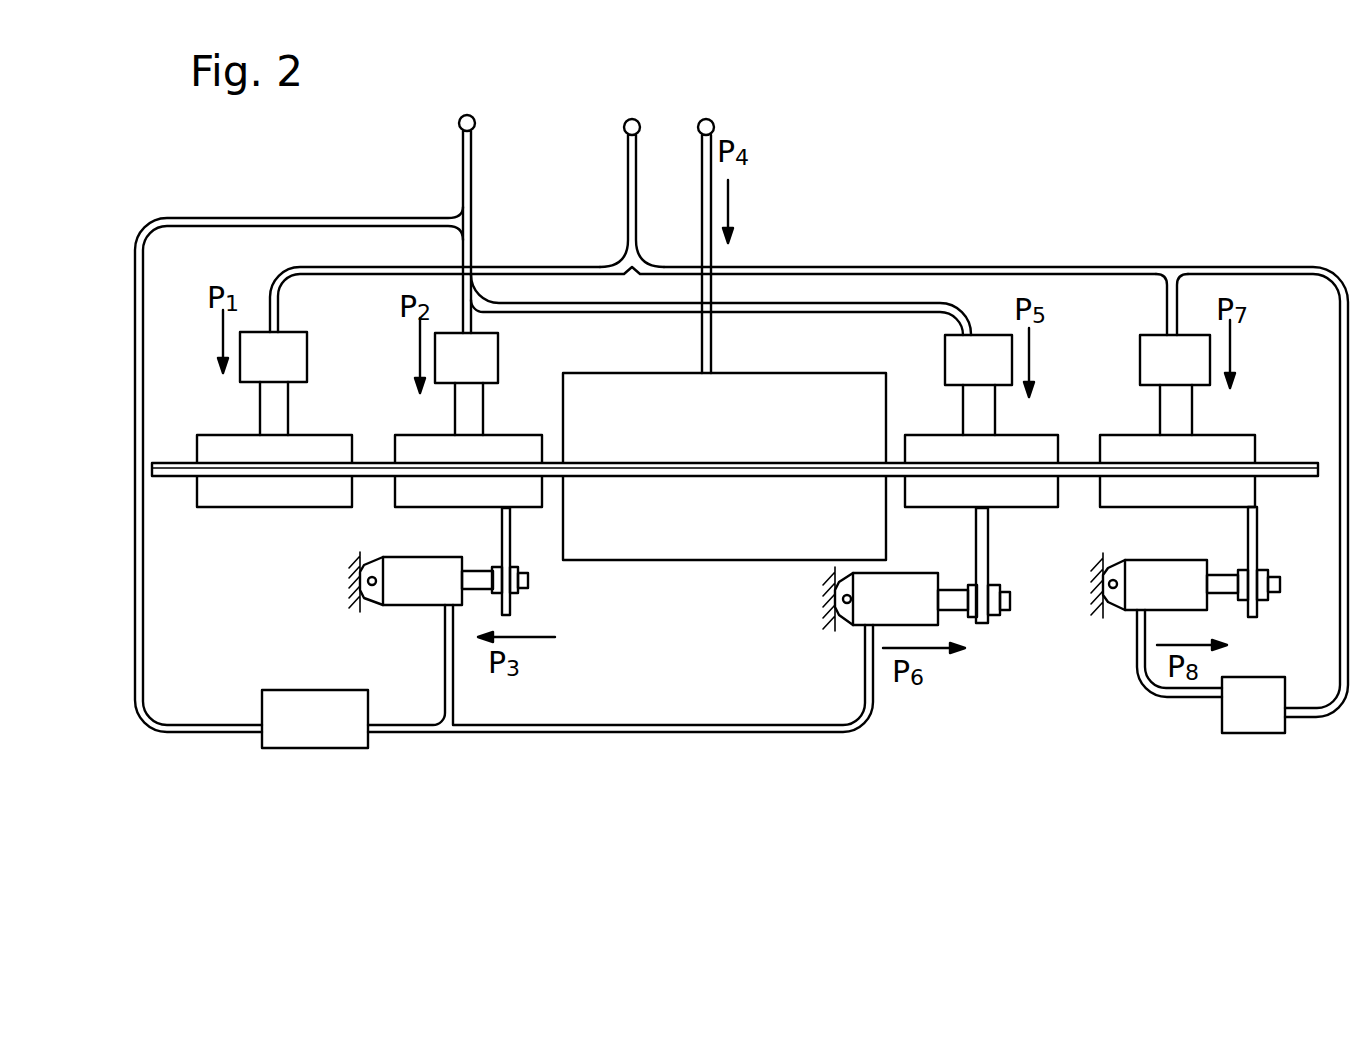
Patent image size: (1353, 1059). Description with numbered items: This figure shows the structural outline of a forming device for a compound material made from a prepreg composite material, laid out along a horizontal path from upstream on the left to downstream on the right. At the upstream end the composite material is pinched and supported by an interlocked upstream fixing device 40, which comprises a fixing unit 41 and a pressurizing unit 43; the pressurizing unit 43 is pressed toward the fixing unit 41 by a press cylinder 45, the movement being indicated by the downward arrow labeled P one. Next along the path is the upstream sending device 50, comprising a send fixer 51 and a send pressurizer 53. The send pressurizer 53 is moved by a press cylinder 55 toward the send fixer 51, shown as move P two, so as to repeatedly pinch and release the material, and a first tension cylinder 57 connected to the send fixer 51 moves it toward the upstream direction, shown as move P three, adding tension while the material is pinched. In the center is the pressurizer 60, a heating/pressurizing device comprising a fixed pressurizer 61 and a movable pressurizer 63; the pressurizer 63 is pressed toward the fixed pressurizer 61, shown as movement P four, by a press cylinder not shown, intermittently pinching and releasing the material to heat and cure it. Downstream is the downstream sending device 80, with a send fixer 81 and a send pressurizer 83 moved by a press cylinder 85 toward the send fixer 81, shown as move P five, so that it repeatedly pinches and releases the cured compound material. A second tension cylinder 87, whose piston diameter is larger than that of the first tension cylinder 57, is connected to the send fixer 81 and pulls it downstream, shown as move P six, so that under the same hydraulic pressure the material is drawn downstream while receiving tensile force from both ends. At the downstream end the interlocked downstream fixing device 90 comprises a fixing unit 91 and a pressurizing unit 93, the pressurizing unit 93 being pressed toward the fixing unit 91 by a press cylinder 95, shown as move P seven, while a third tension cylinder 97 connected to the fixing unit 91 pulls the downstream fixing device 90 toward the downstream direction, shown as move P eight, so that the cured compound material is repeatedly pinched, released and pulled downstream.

The upstream fixing device 40 is at (253, 446).
The fixing unit 41 is at (227, 500).
The pressurizing unit 43 is at (227, 445).
The press cylinder 45 is at (293, 353).
The upstream sending device 50 is at (472, 500).
The send fixer 51 is at (445, 493).
The send pressurizer 53 is at (417, 445).
The press cylinder 55 is at (490, 355).
The first tension cylinder 57 is at (415, 598).
The pressurizer 60 is at (724, 392).
The fixed pressurizer 61 is at (650, 548).
The pressurizer 63 is at (677, 393).
The downstream sending device 80 is at (966, 481).
The send fixer 81 is at (1019, 500).
The send pressurizer 83 is at (1037, 452).
The press cylinder 85 is at (948, 347).
The second tension cylinder 87 is at (907, 588).
The downstream fixing device 90 is at (1193, 473).
The fixing unit 91 is at (1245, 493).
The pressurizing unit 93 is at (1242, 450).
The press cylinder 95 is at (1155, 347).
The third tension cylinder 97 is at (1180, 578).